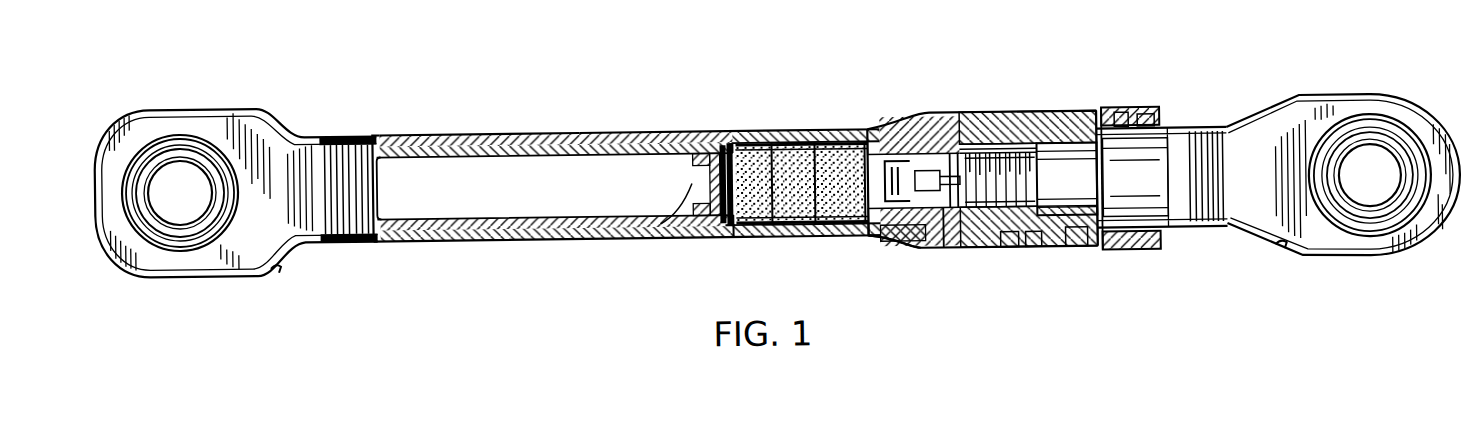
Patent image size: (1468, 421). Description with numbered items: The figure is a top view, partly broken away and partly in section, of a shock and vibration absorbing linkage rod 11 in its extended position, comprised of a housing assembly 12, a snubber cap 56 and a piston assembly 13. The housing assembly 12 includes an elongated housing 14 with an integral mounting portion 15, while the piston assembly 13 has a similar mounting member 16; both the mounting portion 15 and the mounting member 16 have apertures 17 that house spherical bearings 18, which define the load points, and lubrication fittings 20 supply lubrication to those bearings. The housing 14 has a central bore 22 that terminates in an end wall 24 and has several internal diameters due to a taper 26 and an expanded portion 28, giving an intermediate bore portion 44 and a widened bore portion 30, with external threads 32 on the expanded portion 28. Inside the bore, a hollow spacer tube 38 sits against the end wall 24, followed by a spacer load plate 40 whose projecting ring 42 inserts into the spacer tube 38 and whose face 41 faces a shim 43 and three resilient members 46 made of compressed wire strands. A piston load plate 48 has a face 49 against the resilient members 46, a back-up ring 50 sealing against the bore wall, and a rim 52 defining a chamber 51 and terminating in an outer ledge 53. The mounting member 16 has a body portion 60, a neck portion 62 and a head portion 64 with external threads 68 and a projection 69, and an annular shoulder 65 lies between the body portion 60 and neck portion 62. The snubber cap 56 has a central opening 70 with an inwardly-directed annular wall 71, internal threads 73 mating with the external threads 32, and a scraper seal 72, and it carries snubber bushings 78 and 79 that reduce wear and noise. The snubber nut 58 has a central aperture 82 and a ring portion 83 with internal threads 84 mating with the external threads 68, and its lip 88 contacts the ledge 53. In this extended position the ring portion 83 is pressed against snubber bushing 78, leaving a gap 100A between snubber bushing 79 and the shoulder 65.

The linkage rod 11 is at (479, 108).
The housing assembly 12 is at (626, 158).
The piston assembly 13 is at (1162, 154).
The housing 14 is at (352, 230).
The mounting portion 15 is at (239, 191).
The mounting member 16 is at (1341, 177).
The apertures 17 is at (769, 186).
The spherical bearings 18 is at (775, 151).
The lubrication fittings 20 is at (764, 287).
The central bore 22 is at (630, 260).
The end wall 24 is at (411, 188).
The taper 26 is at (770, 156).
The expanded portion 28 is at (1025, 272).
The widened bore portion 30 is at (933, 288).
The external threads 32 is at (982, 208).
The spacer tube 38 is at (555, 186).
The spacer load plate 40 is at (660, 231).
The face 41 is at (709, 251).
The projecting ring 42 is at (671, 184).
The shim 43 is at (711, 140).
The intermediate bore portion 44 is at (747, 157).
The resilient members 46 is at (753, 219).
The piston load plate 48 is at (800, 100).
The face 49 is at (802, 211).
The back-up ring 50 is at (802, 149).
The chamber 51 is at (810, 137).
The rim 52 is at (832, 224).
The outer ledge 53 is at (854, 283).
The snubber cap 56 is at (1027, 95).
The snubber nut 58 is at (998, 143).
The body portion 60 is at (1135, 177).
The neck portion 62 is at (1066, 179).
The head portion 64 is at (999, 113).
The annular shoulder 65 is at (1150, 99).
The external threads 68 is at (970, 117).
The projection 69 is at (937, 130).
The central opening 70 is at (1137, 87).
The inwardly-directed annular wall 71 is at (1115, 135).
The scraper seal 72 is at (1150, 281).
The internal threads 73 is at (903, 284).
The snubber bushing 78 is at (1003, 92).
The snubber bushing 79 is at (1070, 260).
The central aperture 82 is at (899, 142).
The ring portion 83 is at (1000, 270).
The internal threads 84 is at (1047, 277).
The lip 88 is at (903, 248).
The gap 100A is at (1118, 228).